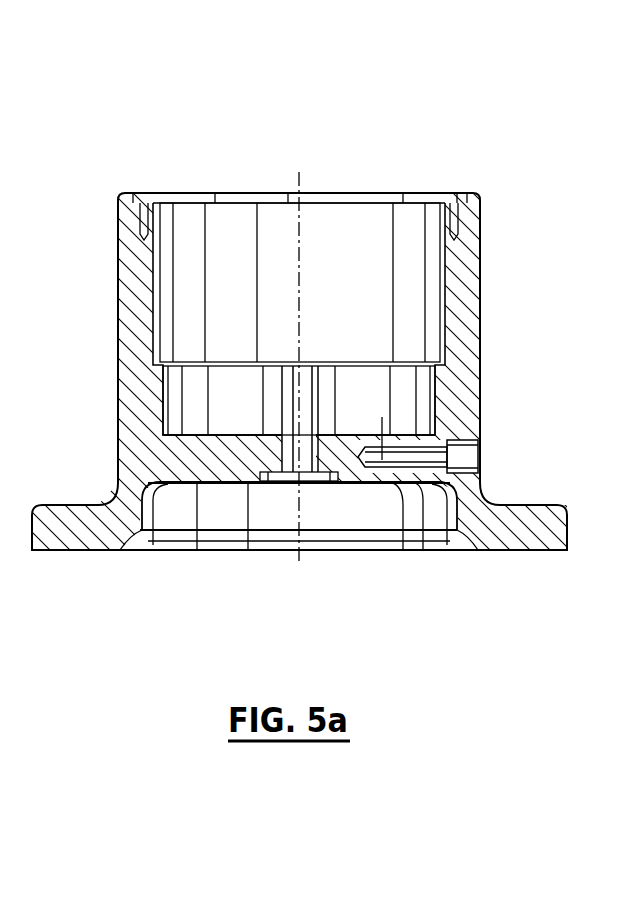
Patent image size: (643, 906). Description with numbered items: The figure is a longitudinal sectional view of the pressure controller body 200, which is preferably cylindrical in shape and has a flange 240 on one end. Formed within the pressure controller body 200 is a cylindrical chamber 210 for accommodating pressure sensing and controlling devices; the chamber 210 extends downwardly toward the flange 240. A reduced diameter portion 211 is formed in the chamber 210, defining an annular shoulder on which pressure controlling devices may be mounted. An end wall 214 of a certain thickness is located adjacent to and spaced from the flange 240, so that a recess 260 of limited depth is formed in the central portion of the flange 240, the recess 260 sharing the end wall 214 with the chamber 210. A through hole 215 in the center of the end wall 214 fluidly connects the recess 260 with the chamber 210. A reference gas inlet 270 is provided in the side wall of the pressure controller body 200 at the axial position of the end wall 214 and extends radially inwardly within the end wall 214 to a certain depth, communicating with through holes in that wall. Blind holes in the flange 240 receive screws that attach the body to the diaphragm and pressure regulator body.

The pressure controller body 200 is at (412, 166).
The cylindrical chamber 210 is at (415, 262).
The reduced diameter portion 211 is at (413, 388).
The end wall 214 is at (199, 427).
The through hole 215 is at (310, 462).
The flange 240 is at (523, 517).
The recess 260 is at (428, 507).
The reference gas inlet 270 is at (467, 457).